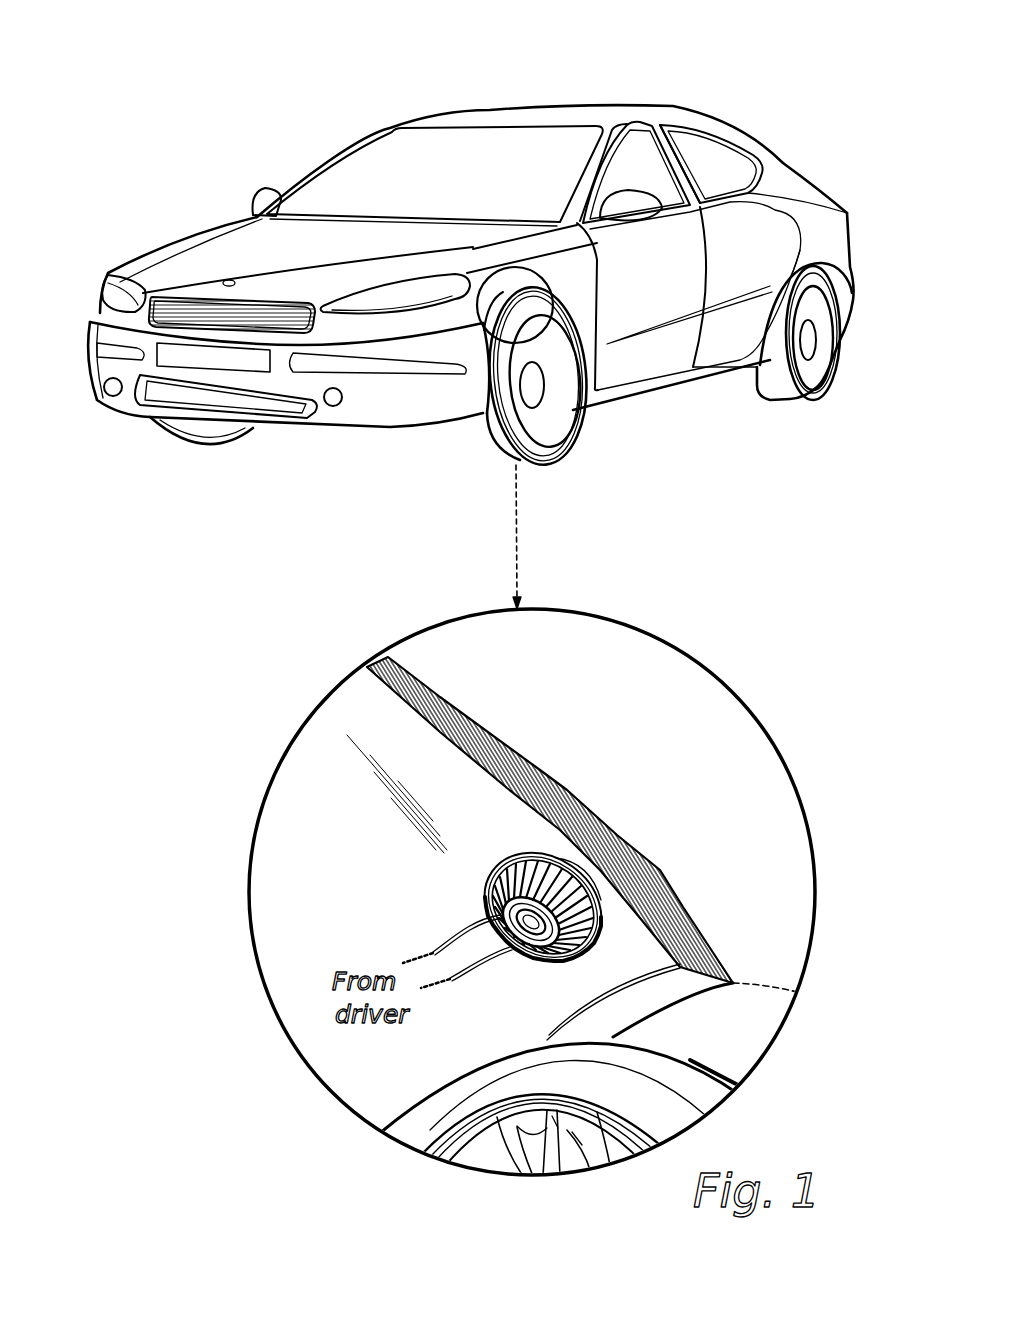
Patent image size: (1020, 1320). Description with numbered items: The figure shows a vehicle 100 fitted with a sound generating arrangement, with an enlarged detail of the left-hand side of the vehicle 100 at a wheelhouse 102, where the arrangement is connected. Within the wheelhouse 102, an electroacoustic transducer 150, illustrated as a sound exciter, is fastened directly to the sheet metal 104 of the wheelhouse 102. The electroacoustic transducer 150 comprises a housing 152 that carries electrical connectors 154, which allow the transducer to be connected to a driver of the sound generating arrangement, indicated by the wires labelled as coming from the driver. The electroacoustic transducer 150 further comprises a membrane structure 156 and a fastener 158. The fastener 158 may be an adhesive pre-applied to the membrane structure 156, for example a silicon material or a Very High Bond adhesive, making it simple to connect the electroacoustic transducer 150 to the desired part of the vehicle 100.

The vehicle 100 is at (562, 113).
The wheelhouse 102 is at (570, 282).
The sheet metal 104 is at (545, 767).
The electroacoustic transducer 150 is at (412, 915).
The housing 152 is at (497, 917).
The electrical connectors 154 is at (515, 943).
The membrane structure 156 is at (540, 855).
The fastener 158 is at (570, 860).